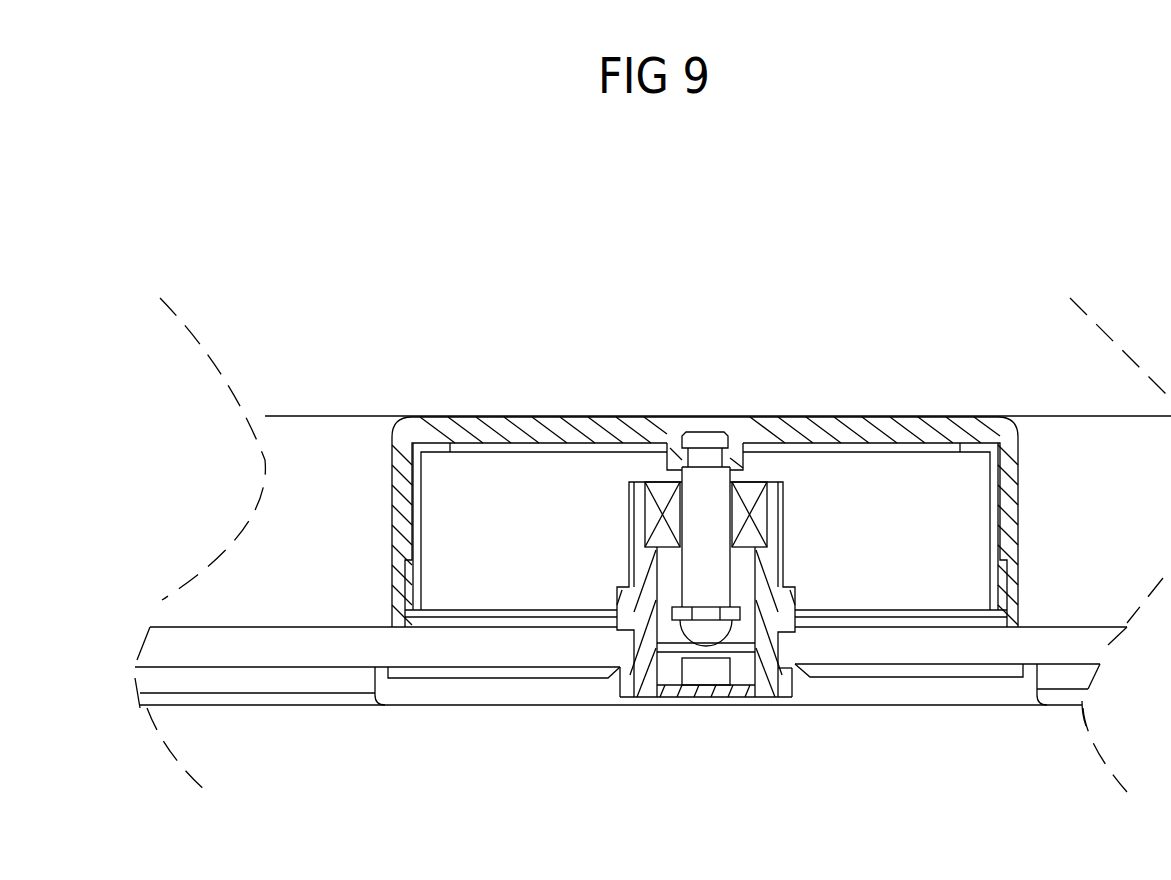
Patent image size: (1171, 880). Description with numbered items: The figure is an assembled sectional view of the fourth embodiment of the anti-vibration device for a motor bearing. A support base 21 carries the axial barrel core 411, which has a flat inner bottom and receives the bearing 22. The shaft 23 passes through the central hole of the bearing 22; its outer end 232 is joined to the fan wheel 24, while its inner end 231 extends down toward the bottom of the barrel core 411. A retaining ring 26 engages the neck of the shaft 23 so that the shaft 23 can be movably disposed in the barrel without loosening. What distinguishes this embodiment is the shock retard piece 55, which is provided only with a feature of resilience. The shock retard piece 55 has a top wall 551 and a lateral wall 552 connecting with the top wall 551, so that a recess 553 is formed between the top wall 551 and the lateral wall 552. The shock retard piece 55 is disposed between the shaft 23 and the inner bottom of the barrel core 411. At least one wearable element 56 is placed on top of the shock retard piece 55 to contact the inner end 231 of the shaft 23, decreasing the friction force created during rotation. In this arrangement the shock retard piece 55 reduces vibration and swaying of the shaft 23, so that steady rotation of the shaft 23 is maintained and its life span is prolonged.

The support base 21 is at (890, 692).
The bearing 22 is at (762, 517).
The shaft 23 is at (715, 493).
The inner end 231 is at (692, 625).
The outer end 232 is at (713, 442).
The fan wheel 24 is at (553, 416).
The retaining ring 26 is at (680, 615).
The axial barrel core 411 is at (640, 488).
The shock retard piece 55 is at (772, 763).
The top wall 551 is at (697, 655).
The lateral wall 552 is at (670, 677).
The recess 553 is at (698, 660).
The wearable element 56 is at (745, 647).